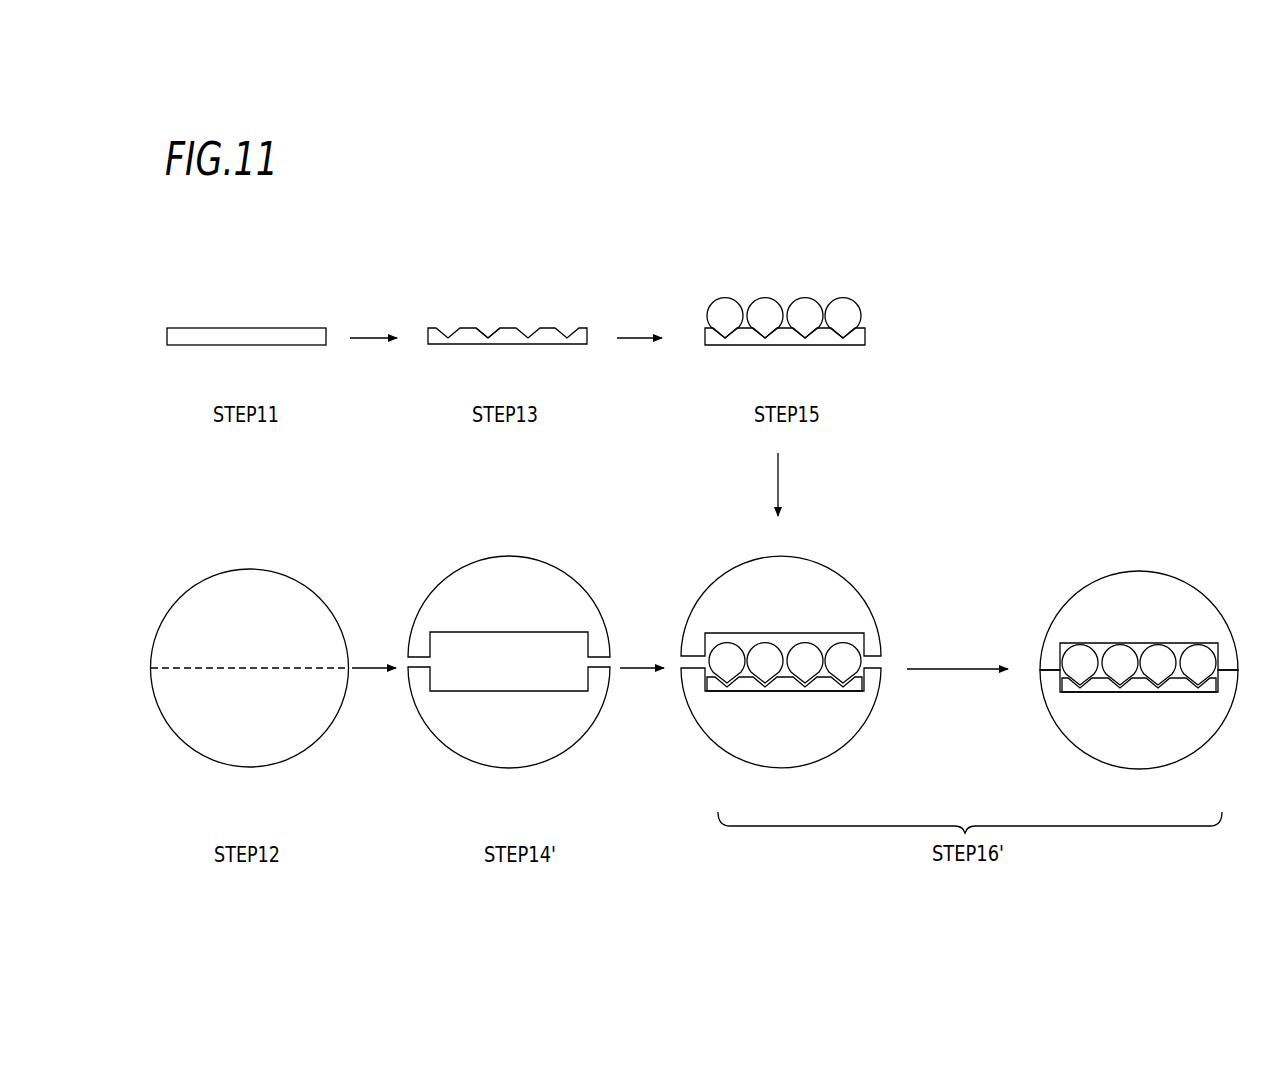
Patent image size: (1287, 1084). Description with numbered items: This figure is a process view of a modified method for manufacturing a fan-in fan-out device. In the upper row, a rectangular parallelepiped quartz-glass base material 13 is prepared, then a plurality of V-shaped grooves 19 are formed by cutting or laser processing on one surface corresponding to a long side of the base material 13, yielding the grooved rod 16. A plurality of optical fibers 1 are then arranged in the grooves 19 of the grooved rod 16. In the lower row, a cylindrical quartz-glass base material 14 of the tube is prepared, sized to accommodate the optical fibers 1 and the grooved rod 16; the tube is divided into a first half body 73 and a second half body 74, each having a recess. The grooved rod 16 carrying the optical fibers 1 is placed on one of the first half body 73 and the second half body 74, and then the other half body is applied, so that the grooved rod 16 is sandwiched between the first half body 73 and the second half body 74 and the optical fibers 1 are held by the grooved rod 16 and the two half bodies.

The optical fiber 1 is at (818, 292).
The base material 13 is at (239, 328).
The base material 14 is at (207, 575).
The grooved rod 16 is at (548, 296).
The V-shaped groove 19 is at (487, 328).
The first half body 73 is at (443, 576).
The second half body 74 is at (438, 741).